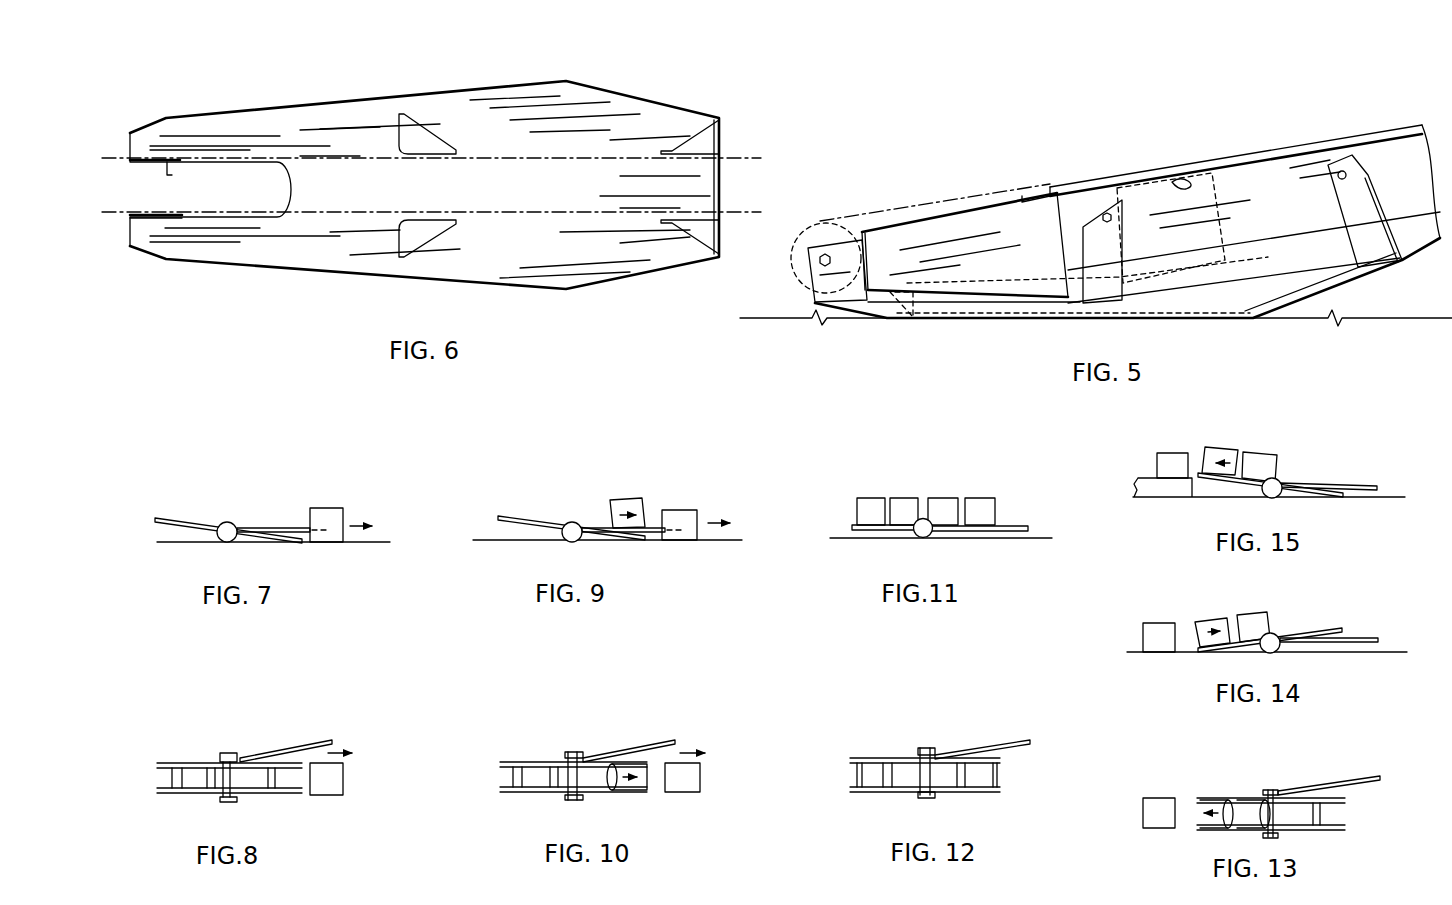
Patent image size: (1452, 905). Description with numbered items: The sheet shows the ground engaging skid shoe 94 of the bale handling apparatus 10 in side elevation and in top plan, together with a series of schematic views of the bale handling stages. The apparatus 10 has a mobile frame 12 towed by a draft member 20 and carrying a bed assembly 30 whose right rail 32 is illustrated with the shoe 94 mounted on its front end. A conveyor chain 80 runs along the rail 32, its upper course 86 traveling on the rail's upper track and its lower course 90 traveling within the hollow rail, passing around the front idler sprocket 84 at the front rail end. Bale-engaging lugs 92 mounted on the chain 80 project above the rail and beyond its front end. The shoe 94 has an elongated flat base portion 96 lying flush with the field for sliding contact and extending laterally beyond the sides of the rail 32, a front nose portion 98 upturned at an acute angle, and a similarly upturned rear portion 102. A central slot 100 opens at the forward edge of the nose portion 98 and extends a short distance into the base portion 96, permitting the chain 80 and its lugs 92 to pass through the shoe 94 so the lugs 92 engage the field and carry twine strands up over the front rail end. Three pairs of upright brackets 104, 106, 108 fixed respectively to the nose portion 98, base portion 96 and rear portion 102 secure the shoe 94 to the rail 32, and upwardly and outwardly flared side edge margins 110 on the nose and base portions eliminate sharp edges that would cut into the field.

In FIG. 7, the apparatus 10 is at (242, 520).
In FIG. 8, the apparatus 10 is at (244, 770).
In FIG. 9, the apparatus 10 is at (589, 520).
In FIG. 10, the apparatus 10 is at (587, 770).
In FIG. 11, the apparatus 10 is at (944, 515).
In FIG. 12, the apparatus 10 is at (937, 761).
In FIG. 13, the apparatus 10 is at (1288, 805).
In FIG. 14, the apparatus 10 is at (1282, 636).
In FIG. 15, the apparatus 10 is at (1281, 482).
In FIG. 7, the mobile frame 12 is at (244, 525).
In FIG. 8, the mobile frame 12 is at (240, 777).
In FIG. 9, the mobile frame 12 is at (594, 508).
In FIG. 10, the mobile frame 12 is at (580, 775).
In FIG. 12, the mobile frame 12 is at (926, 773).
In FIG. 13, the mobile frame 12 is at (1270, 814).
In FIG. 7, the draft member 20 is at (287, 527).
In FIG. 8, the draft member 20 is at (313, 743).
In FIG. 9, the draft member 20 is at (650, 525).
In FIG. 10, the draft member 20 is at (662, 742).
In FIG. 11, the draft member 20 is at (1018, 525).
In FIG. 12, the draft member 20 is at (1017, 742).
In FIG. 13, the draft member 20 is at (1352, 781).
In FIG. 14, the draft member 20 is at (1370, 640).
In FIG. 15, the draft member 20 is at (1338, 485).
In FIG. 7, the bed assembly 30 is at (183, 532).
In FIG. 8, the bed assembly 30 is at (192, 795).
In FIG. 9, the bed assembly 30 is at (508, 528).
In FIG. 10, the bed assembly 30 is at (543, 797).
In FIG. 11, the bed assembly 30 is at (893, 534).
In FIG. 12, the bed assembly 30 is at (848, 796).
In FIG. 13, the bed assembly 30 is at (1308, 834).
In FIG. 14, the bed assembly 30 is at (1226, 658).
In FIG. 15, the bed assembly 30 is at (1220, 487).
In FIG. 6, the right rail 32 is at (734, 154).
In FIG. 5, the right rail 32 is at (1013, 193).
In FIG. 5, the conveyor chain 80 is at (879, 201).
In FIG. 5, the front idler sprocket 84 is at (824, 223).
In FIG. 5, the upper course 86 is at (973, 196).
In FIG. 5, the lower course 90 is at (1017, 276).
In FIG. 5, the bale-engaging lug 92 is at (777, 272).
In FIG. 6, the skid shoe 94 is at (691, 78).
In FIG. 5, the skid shoe 94 is at (1406, 298).
In FIG. 6, the base portion 96 is at (355, 183).
In FIG. 5, the base portion 96 is at (1102, 314).
In FIG. 6, the front nose portion 98 is at (216, 142).
In FIG. 5, the front nose portion 98 is at (847, 311).
In FIG. 6, the central slot 100 is at (148, 202).
In FIG. 5, the central slot 100 is at (969, 316).
In FIG. 6, the rear portion 102 is at (701, 192).
In FIG. 5, the rear portion 102 is at (1340, 290).
In FIG. 6, the bracket 104 is at (180, 214).
In FIG. 5, the bracket 104 is at (873, 262).
In FIG. 6, the bracket 106 is at (443, 162).
In FIG. 5, the bracket 106 is at (1122, 242).
In FIG. 6, the bracket 108 is at (694, 149).
In FIG. 5, the bracket 108 is at (1367, 210).
In FIG. 6, the flared side edge margin 110 is at (450, 95).
In FIG. 5, the flared side edge margin 110 is at (1181, 309).